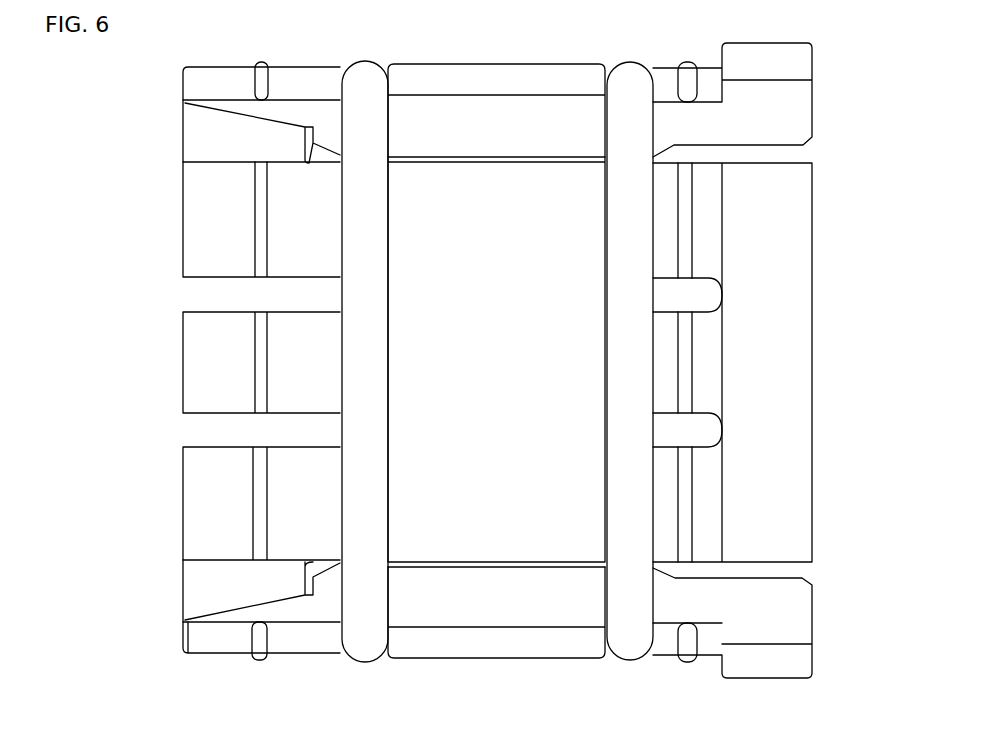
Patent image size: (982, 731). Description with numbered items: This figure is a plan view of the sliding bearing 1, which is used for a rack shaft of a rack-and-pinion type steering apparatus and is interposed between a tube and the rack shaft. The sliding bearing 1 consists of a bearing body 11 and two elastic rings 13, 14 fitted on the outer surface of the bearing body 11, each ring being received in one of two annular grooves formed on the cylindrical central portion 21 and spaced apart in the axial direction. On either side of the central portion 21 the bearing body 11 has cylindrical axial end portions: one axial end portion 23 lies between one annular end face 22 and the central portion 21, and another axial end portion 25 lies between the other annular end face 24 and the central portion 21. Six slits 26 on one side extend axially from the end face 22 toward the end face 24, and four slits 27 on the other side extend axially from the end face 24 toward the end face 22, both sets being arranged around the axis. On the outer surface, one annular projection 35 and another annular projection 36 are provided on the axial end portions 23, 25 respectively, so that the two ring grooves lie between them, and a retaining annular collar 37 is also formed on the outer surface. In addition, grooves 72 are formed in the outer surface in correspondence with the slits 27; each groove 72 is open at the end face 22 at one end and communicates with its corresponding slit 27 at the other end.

The sliding bearing 1 is at (168, 652).
The bearing body 11 is at (576, 72).
The elastic ring 13 is at (357, 76).
The elastic ring 14 is at (631, 645).
The central portion 21 is at (497, 645).
The end face 22 is at (185, 362).
The axial end portion 23 is at (218, 76).
The end face 24 is at (812, 485).
The axial end portion 25 is at (705, 637).
The slit 26 is at (210, 293).
The slit 27 is at (493, 118).
The annular projection 35 is at (258, 503).
The annular projection 36 is at (686, 366).
The retaining annular collar 37 is at (762, 58).
The groove 72 is at (207, 142).